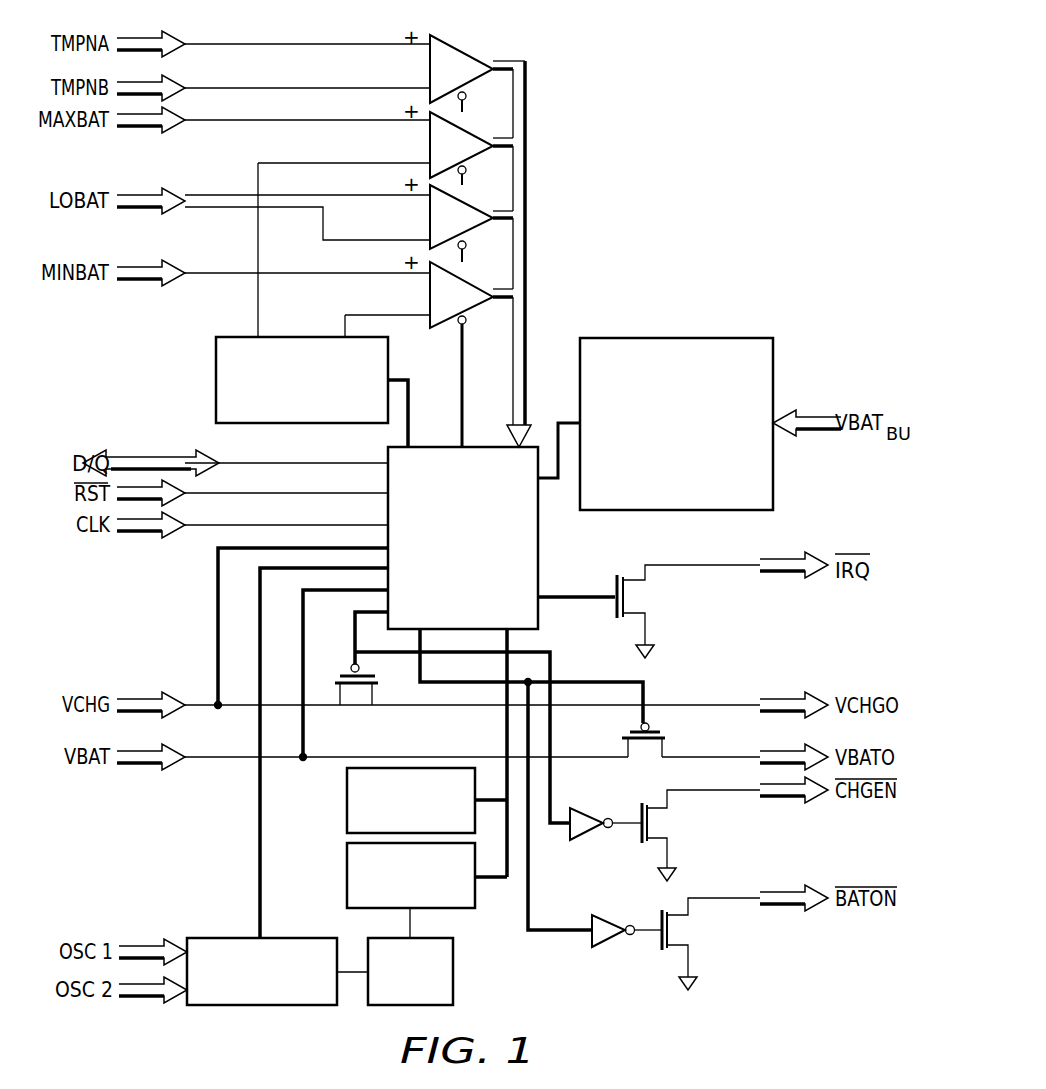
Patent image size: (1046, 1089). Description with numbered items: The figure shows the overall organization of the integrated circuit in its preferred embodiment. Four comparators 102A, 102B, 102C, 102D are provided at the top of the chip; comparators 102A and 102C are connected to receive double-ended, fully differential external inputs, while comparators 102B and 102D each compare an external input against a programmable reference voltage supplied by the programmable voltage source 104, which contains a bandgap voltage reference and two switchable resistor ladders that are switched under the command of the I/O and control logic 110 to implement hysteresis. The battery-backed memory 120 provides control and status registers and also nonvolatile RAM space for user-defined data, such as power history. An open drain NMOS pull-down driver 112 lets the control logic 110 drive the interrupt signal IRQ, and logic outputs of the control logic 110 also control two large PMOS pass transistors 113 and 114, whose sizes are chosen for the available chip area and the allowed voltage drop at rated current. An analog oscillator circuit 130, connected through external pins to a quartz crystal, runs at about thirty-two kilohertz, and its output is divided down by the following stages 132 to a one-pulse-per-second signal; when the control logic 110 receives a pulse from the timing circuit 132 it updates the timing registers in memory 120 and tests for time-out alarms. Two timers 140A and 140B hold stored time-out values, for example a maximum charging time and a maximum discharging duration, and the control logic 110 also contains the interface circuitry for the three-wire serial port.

The comparator 102A is at (473, 53).
The comparator 102B is at (430, 154).
The comparator 102C is at (430, 230).
The comparator 102D is at (430, 303).
The programmable voltage source 104 is at (216, 366).
The I/O and control logic 110 is at (484, 611).
The open drain NMOS pull-down driver 112 is at (615, 592).
The PMOS pass transistor 113 is at (662, 747).
The PMOS pass transistor 114 is at (343, 668).
The battery-backed memory 120 is at (676, 338).
The analog oscillator circuit 130 is at (228, 938).
The timing circuit 132 is at (453, 975).
The timer 140A is at (347, 875).
The timer 140B is at (347, 800).